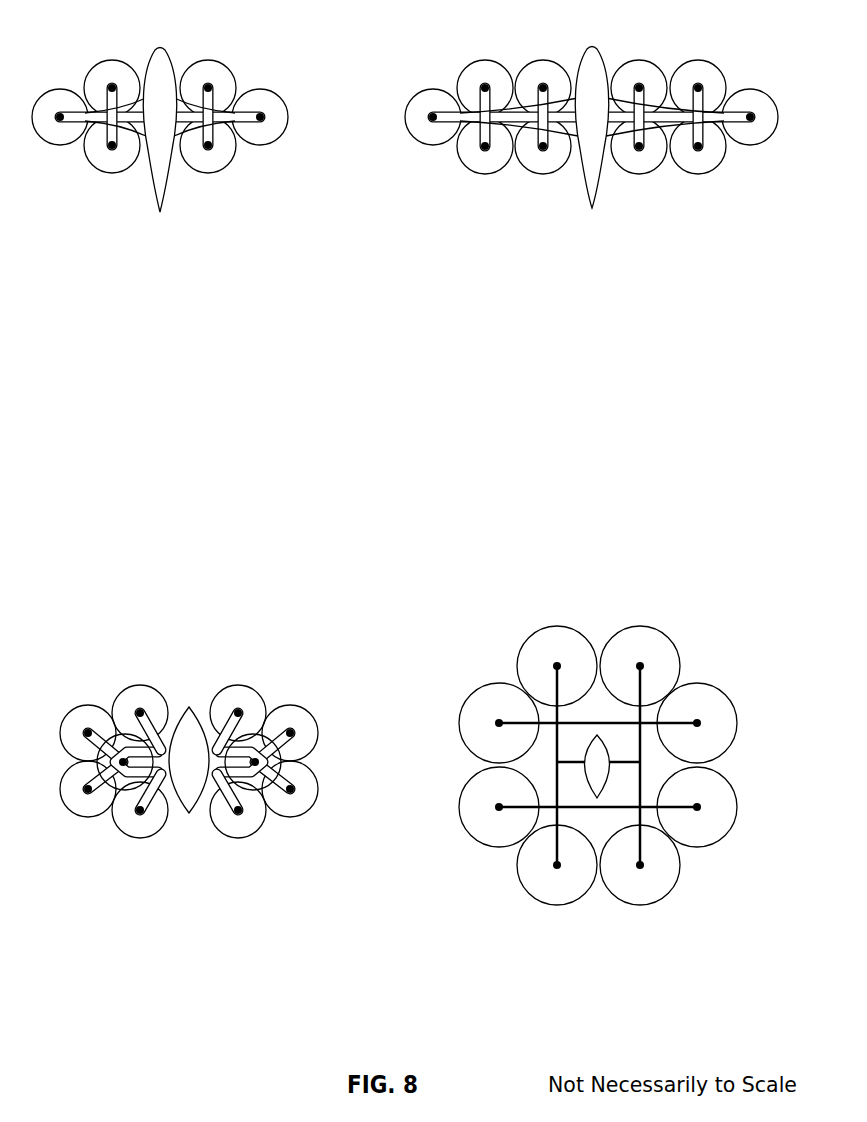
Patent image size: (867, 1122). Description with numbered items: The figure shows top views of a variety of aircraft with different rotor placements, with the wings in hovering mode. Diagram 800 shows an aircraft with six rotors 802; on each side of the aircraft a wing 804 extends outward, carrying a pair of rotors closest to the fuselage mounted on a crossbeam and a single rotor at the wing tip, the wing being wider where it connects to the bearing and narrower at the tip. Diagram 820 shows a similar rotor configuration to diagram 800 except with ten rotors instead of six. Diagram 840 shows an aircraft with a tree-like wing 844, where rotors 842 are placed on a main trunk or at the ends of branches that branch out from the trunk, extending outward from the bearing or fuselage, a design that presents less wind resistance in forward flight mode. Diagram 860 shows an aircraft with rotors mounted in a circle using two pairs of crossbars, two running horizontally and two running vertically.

The diagram 800 is at (182, 108).
The rotors 802 is at (68, 100).
The wing 804 is at (74, 128).
The diagram 820 is at (708, 33).
The diagram 840 is at (189, 726).
The rotors 842 is at (92, 705).
The wing 844 is at (96, 763).
The diagram 860 is at (680, 601).